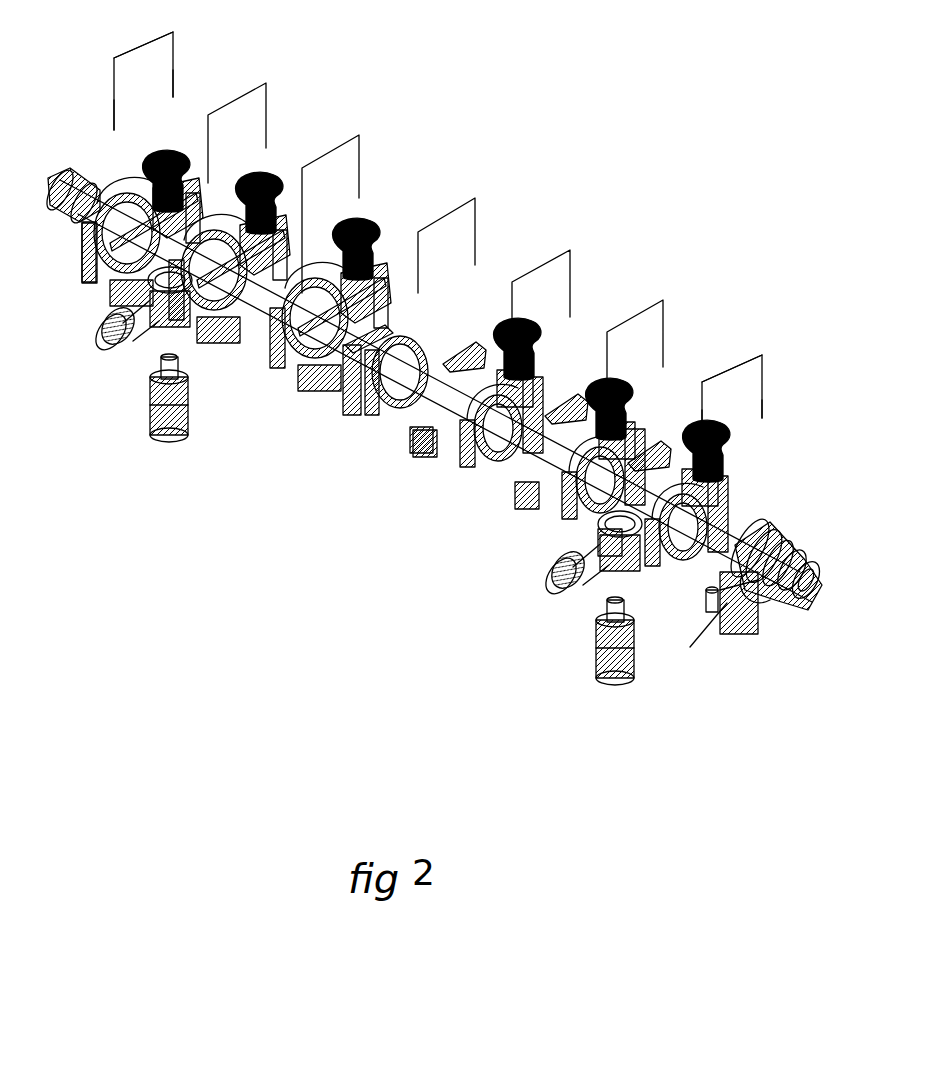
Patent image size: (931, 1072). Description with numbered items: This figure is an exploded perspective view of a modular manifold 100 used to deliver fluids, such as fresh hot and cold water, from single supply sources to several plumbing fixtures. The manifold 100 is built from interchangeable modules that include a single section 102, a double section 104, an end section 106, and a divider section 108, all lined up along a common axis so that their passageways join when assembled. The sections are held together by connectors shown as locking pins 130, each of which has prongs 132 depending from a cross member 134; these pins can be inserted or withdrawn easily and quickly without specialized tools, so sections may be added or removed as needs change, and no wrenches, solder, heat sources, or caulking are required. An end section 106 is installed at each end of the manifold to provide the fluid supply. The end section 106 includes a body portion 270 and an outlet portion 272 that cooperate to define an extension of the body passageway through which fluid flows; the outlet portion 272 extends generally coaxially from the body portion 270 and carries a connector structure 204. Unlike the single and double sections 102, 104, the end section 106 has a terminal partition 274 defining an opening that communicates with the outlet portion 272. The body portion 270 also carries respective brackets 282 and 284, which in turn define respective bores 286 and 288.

The modular manifold 100 is at (608, 186).
The single section 102 is at (283, 357).
The double section 104 is at (178, 328).
The end section 106 is at (80, 248).
The divider section 108 is at (352, 423).
The locking pin 130 is at (173, 55).
The prong 132 is at (173, 80).
The cross member 134 is at (136, 48).
The connector structure 204 is at (817, 592).
The body portion 270 is at (800, 543).
The outlet portion 272 is at (800, 560).
The terminal partition 274 is at (767, 617).
The bracket 282 is at (725, 628).
The bracket 284 is at (800, 532).
The bore 286 is at (727, 603).
The bore 288 is at (783, 540).